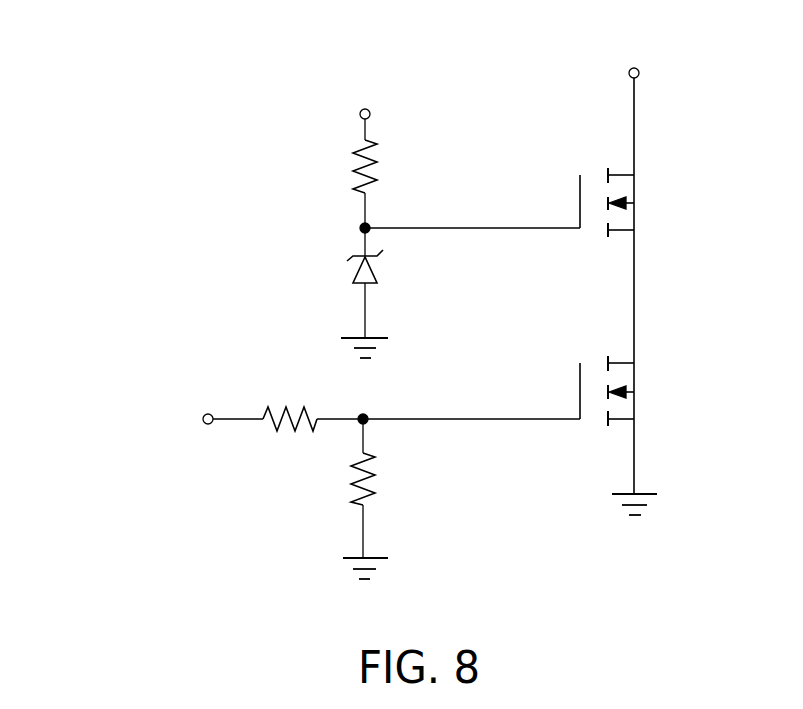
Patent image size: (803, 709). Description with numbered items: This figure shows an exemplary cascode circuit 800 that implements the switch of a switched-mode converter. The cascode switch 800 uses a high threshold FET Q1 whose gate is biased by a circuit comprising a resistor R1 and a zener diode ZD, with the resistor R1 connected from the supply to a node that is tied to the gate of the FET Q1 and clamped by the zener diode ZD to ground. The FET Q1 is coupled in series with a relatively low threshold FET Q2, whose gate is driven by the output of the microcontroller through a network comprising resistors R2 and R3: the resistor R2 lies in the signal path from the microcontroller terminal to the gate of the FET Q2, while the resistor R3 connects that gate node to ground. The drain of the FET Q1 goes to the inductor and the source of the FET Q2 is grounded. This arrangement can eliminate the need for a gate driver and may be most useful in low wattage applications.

The cascode circuit 800 is at (262, 48).
The resistor R1 is at (337, 166).
The resistor R2 is at (290, 399).
The resistor R3 is at (383, 479).
The zener diode ZD is at (344, 271).
The high threshold FET Q1 is at (640, 204).
The low threshold FET Q2 is at (640, 393).